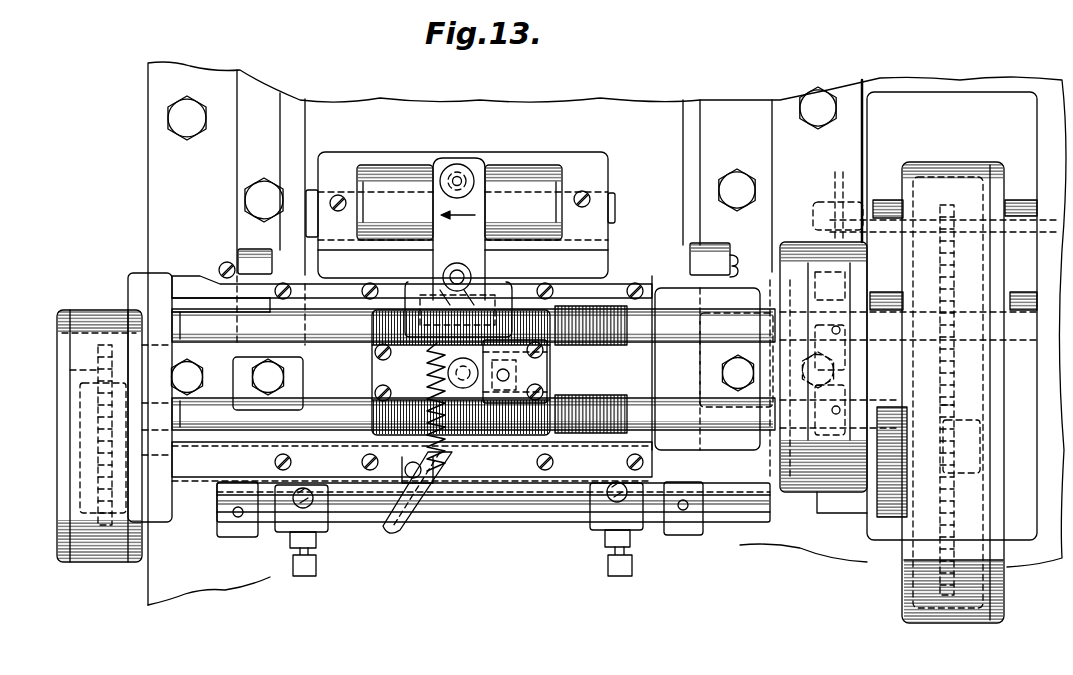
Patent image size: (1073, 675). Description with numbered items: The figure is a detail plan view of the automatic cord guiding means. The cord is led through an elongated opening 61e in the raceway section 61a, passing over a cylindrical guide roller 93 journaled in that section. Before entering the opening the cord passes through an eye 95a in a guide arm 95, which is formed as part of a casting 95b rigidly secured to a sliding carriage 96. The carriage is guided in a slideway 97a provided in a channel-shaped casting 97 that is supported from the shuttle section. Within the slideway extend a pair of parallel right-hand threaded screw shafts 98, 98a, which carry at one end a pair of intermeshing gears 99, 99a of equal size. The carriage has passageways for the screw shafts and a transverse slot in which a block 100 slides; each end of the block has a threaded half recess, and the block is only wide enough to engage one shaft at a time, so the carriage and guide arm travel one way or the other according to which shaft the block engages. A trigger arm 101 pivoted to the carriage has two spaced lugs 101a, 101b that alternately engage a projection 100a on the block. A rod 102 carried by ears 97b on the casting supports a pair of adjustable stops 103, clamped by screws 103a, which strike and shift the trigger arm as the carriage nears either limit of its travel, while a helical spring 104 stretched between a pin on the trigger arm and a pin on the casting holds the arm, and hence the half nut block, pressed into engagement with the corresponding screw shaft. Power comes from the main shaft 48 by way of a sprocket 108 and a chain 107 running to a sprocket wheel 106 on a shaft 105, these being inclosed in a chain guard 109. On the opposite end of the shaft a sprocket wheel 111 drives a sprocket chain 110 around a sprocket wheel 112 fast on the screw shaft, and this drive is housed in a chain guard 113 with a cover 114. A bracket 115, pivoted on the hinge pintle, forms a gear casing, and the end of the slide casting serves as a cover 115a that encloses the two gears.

The raceway section 61a is at (622, 117).
The elongated opening 61e is at (401, 185).
The cylindrical guide roller 93 is at (515, 200).
The guide arm 95 is at (456, 166).
The eye 95a is at (463, 178).
The casting 95b is at (412, 300).
The channel-shaped casting 97 is at (193, 503).
The slideway 97a is at (345, 300).
The ears 97b is at (235, 530).
The screw shaft 98 is at (650, 343).
The screw shaft 98a is at (656, 408).
The sliding carriage 96 is at (460, 372).
The block 100 is at (528, 380).
The projection 100a is at (520, 362).
The trigger arm 101 is at (406, 522).
The lug 101a is at (503, 369).
The lug 101b is at (476, 450).
The helical spring 104 is at (437, 407).
The rod 102 is at (497, 512).
The adjustable stops 103 is at (290, 535).
The screws 103a is at (305, 578).
The shaft 105 is at (980, 458).
The sprocket chain 110 is at (58, 522).
The sprocket wheel 111 is at (100, 482).
The sprocket wheel 112 is at (100, 412).
The chain guard 113 is at (62, 363).
The cover 114 is at (80, 378).
The gear 99 is at (836, 292).
The gear 99a is at (846, 386).
The bracket 115 is at (826, 246).
The cover 115a is at (792, 268).
The main shaft 48 is at (822, 232).
The chain 107 is at (932, 408).
The sprocket 108 is at (945, 255).
The sprocket wheel 106 is at (940, 508).
The chain guard 109 is at (918, 586).